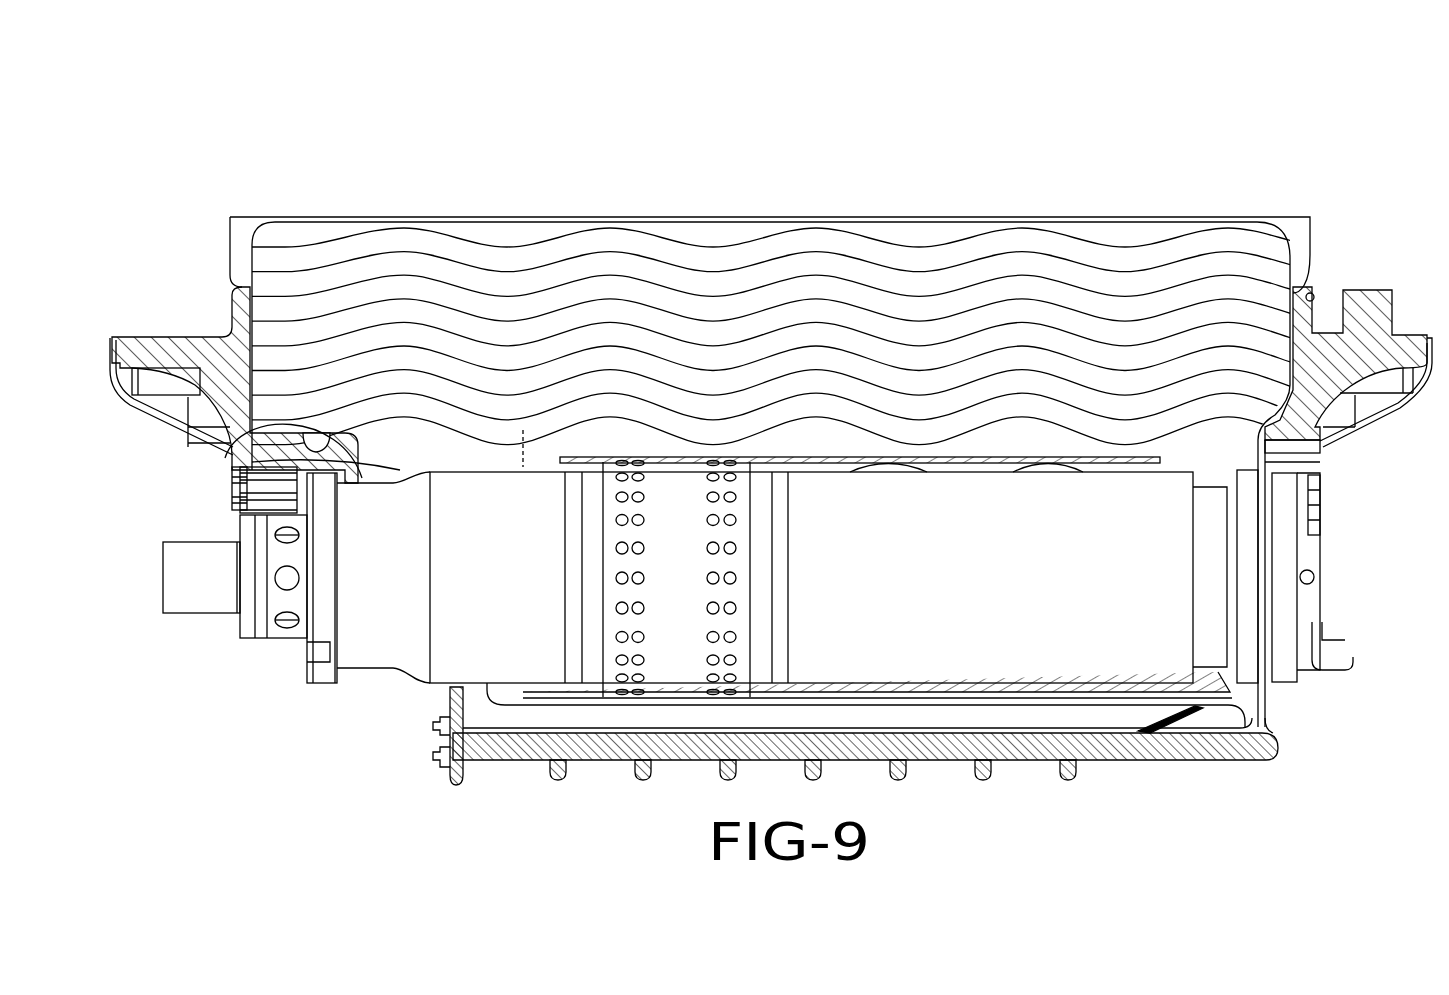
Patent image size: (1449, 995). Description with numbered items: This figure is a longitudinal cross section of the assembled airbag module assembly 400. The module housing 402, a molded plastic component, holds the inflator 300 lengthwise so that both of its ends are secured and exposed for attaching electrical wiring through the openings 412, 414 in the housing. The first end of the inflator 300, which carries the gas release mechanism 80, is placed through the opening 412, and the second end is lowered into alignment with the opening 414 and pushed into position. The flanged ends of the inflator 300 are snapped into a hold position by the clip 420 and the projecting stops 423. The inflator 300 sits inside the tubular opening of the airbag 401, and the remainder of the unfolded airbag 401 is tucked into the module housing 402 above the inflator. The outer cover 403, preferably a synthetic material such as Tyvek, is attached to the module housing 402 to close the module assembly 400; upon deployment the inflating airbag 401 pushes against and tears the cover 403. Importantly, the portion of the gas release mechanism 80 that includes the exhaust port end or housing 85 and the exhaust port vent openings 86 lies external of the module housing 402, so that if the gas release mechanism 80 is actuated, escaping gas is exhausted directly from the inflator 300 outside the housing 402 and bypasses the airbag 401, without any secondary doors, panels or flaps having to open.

The airbag module assembly 400 is at (230, 187).
The cover 403 is at (683, 215).
The airbag 401 is at (1030, 272).
The module housing 402 is at (1375, 325).
The projecting stops 423 is at (245, 440).
The clip 420 is at (303, 488).
The exhaust port end or housing 85 is at (257, 630).
The exhaust port vent openings 86 is at (285, 627).
The gas release mechanism 80 is at (300, 688).
The opening 412 is at (453, 683).
The opening 414 is at (1320, 550).
The inflator 300 is at (1178, 618).